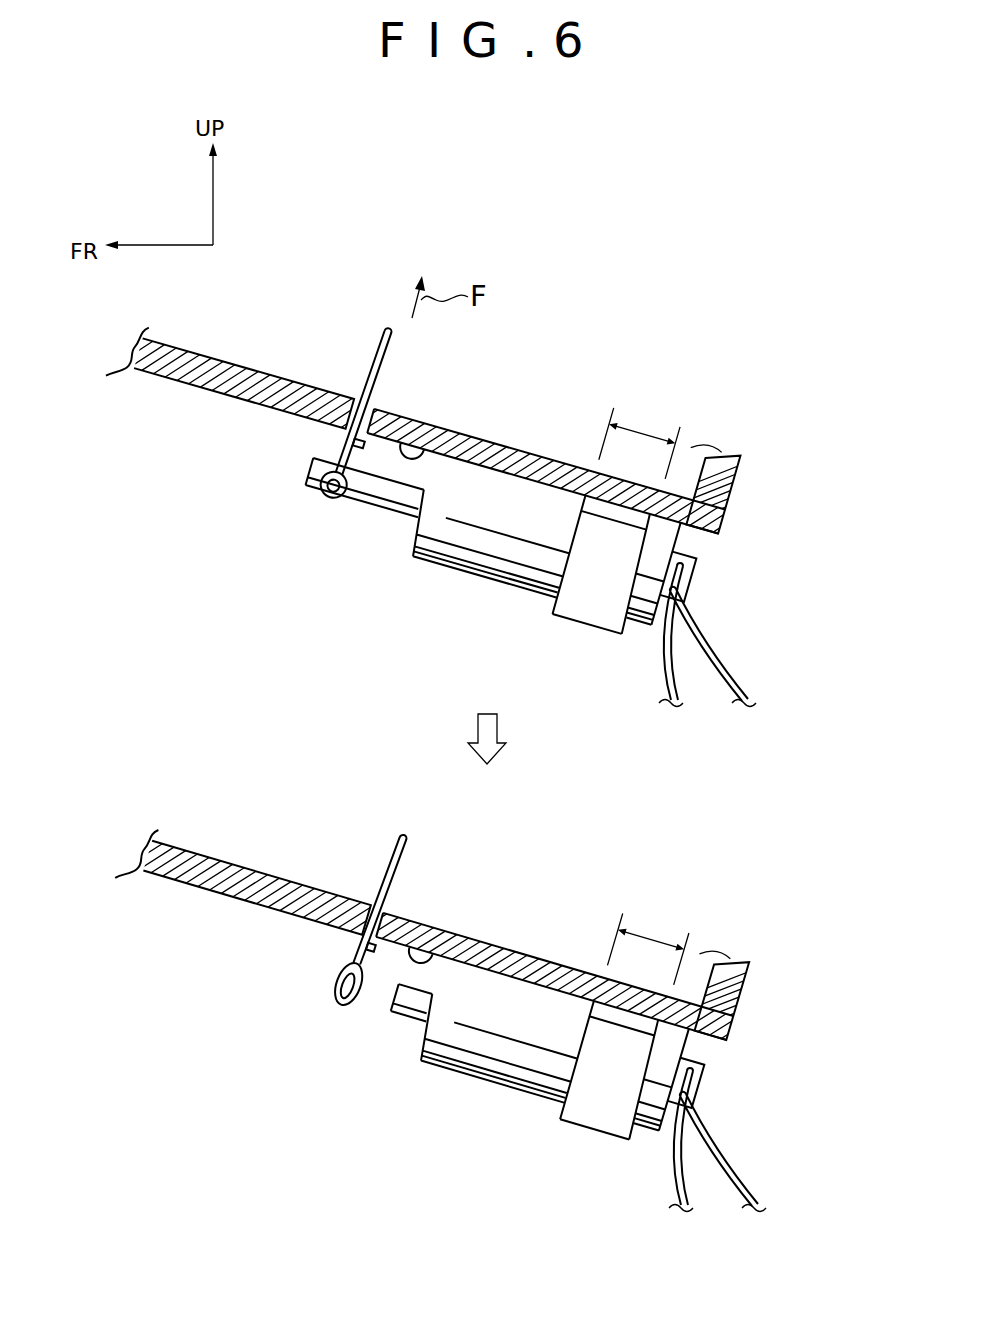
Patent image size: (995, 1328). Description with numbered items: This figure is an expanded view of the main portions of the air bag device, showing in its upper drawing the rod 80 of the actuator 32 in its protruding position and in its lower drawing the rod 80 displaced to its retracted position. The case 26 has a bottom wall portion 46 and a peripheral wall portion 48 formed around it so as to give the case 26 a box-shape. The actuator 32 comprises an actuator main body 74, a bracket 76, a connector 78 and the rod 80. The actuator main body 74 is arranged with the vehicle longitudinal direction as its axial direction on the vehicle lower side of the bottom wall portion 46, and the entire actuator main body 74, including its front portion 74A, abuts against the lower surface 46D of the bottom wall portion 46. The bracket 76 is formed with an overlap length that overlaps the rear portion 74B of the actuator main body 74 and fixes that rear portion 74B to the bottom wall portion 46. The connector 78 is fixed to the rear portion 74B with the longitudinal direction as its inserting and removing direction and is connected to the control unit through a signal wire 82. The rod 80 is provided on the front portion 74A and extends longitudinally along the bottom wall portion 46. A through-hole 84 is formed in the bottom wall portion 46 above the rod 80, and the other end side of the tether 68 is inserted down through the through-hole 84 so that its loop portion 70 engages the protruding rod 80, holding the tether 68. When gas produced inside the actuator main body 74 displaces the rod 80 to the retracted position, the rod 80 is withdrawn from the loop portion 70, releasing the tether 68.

The case 26 is at (737, 494).
The actuator 32 is at (482, 605).
The bottom wall portion 46 is at (235, 363).
The lower surface 46D is at (431, 462).
The peripheral wall portion 48 is at (741, 467).
The tether 68 is at (410, 341).
The loop portion 70 is at (333, 500).
The actuator main body 74 is at (460, 572).
The front portion 74A is at (495, 463).
The rear portion 74B is at (634, 504).
The bracket 76 is at (582, 625).
The connector 78 is at (699, 572).
The rod 80 is at (381, 506).
The signal wire 82 is at (726, 665).
The through-hole 84 is at (379, 410).